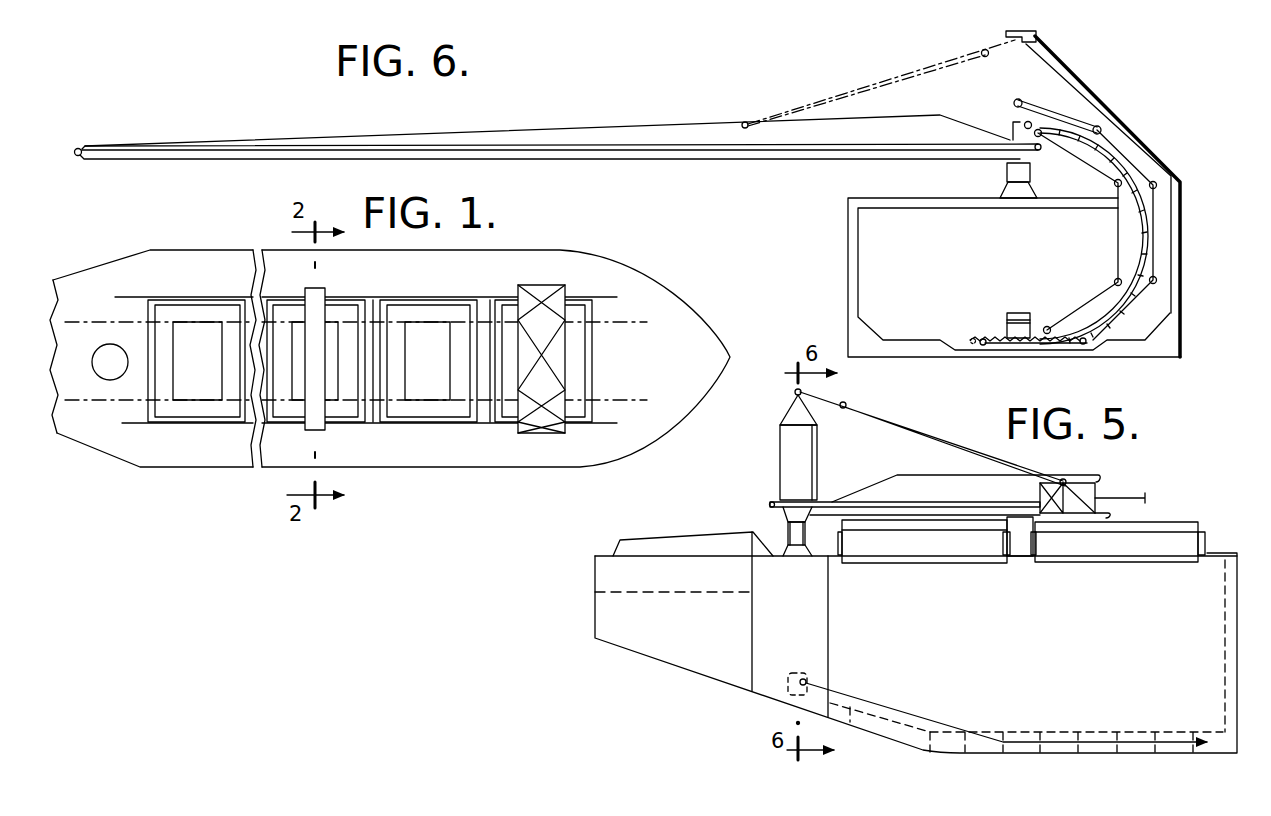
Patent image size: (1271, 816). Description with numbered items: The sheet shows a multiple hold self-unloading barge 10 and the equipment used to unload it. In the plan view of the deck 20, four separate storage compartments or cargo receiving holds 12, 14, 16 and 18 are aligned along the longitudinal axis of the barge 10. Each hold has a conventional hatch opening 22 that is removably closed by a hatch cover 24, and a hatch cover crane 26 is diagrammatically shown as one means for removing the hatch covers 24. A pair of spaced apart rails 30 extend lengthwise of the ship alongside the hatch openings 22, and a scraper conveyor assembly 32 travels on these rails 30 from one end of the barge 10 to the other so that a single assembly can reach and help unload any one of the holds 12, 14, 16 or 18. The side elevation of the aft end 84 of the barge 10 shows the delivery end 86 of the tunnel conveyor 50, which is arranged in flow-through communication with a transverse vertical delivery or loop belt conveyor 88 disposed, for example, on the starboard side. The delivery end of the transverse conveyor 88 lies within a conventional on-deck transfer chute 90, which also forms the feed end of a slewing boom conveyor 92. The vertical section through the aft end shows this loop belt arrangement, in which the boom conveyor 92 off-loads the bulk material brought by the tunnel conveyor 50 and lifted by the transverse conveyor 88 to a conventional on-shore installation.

In FIG. 1, the self-unloading barge 10 is at (474, 474).
In FIG. 1, the hold 12 is at (179, 272).
In FIG. 1, the hold 14 is at (342, 302).
In FIG. 1, the hold 16 is at (400, 302).
In FIG. 1, the hold 18 is at (577, 303).
In FIG. 1, the deck 20 is at (703, 381).
In FIG. 1, the hatch opening 22 is at (210, 373).
In FIG. 1, the hatch cover 24 is at (437, 371).
In FIG. 1, the hatch cover crane 26 is at (540, 286).
In FIG. 1, the rails 30 is at (72, 321).
In FIG. 1, the scraper conveyor assembly 32 is at (307, 289).
In FIG. 6, the tunnel conveyor 50 is at (1007, 317).
In FIG. 5, the tunnel conveyor 50 is at (949, 730).
In FIG. 5, the aft end 84 is at (595, 608).
In FIG. 5, the delivery end 86 is at (803, 679).
In FIG. 6, the transverse vertical delivery or loop belt conveyor 88 is at (1153, 230).
In FIG. 1, the on-deck transfer chute 90 is at (122, 372).
In FIG. 6, the on-deck transfer chute 90 is at (1024, 26).
In FIG. 5, the on-deck transfer chute 90 is at (788, 457).
In FIG. 6, the slewing boom conveyor 92 is at (741, 121).
In FIG. 5, the slewing boom conveyor 92 is at (1058, 468).